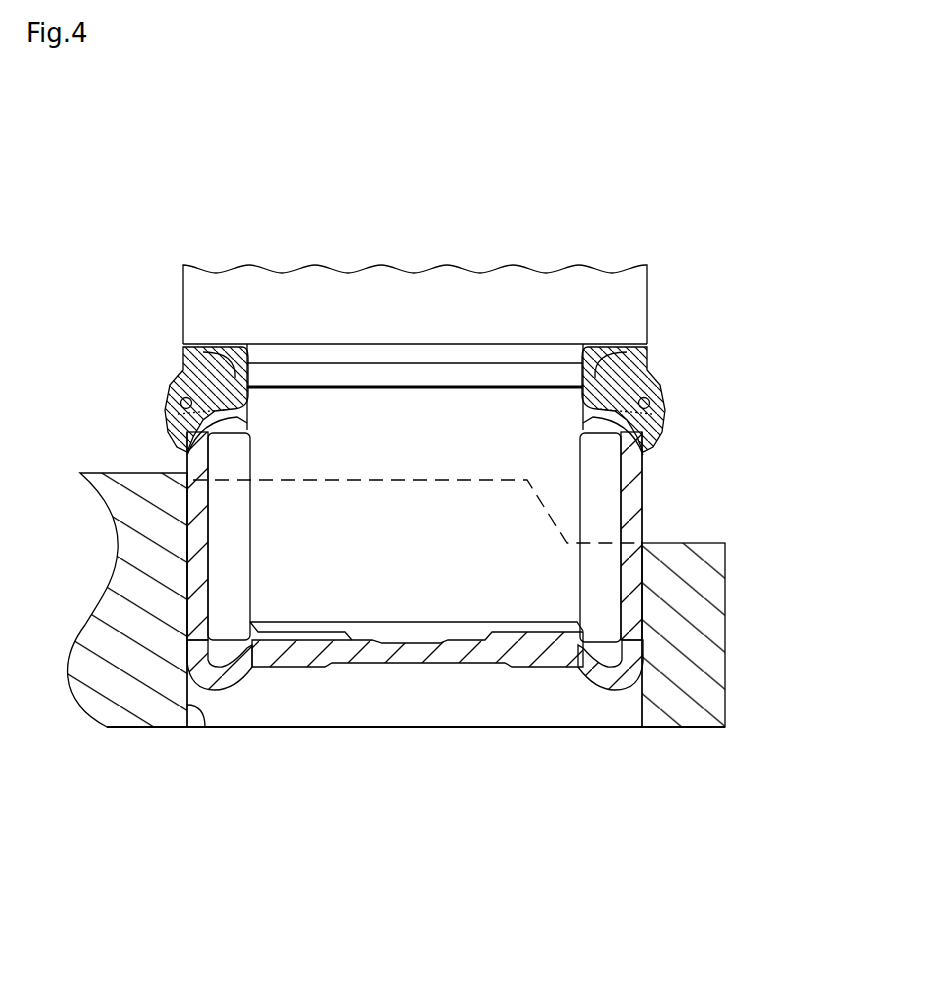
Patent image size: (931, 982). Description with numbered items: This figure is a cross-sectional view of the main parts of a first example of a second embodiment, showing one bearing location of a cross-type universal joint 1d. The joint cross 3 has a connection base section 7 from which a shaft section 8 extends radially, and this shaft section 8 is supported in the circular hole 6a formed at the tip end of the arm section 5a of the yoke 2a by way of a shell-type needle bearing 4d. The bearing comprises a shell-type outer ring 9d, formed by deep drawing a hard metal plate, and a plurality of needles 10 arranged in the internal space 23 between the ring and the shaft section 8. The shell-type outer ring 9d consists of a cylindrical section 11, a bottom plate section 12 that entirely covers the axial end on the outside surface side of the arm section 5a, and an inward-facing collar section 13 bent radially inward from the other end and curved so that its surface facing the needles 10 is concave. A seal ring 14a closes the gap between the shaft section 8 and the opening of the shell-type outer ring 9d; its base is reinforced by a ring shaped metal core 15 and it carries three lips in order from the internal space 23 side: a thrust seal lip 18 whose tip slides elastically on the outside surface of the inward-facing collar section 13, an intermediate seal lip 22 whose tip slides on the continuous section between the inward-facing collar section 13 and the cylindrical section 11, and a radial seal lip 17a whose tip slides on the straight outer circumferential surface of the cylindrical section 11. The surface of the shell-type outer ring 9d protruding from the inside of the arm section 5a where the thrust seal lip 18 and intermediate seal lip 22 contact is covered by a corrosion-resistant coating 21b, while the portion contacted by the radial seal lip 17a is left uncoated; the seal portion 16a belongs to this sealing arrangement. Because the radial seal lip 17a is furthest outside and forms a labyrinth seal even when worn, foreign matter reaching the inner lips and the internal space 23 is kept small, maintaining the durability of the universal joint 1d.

The cross-type universal joint 1d is at (496, 197).
The joint cross 3 is at (433, 297).
The connection base section 7 is at (537, 295).
The shaft section 8 is at (363, 437).
The ring shaped metal core 15 is at (203, 345).
The seal inner lip 16a is at (188, 352).
The thrust seal lip 18 is at (172, 410).
The corrosion-resistant coating 21b is at (168, 438).
The seal ring 14a is at (666, 365).
The intermediate seal lip 22 is at (669, 413).
The radial seal lip 17a is at (658, 447).
The inward-facing collar section 13 is at (187, 462).
The cylindrical section 11 is at (622, 556).
The needles 10 is at (600, 588).
The yoke 2a is at (95, 678).
The arm section 5a is at (681, 666).
The bottom plate section 12 is at (418, 653).
The shell-type outer ring 9d is at (300, 657).
The internal space 23 is at (610, 660).
The space 4d is at (521, 688).
The circular hole 6a is at (205, 713).